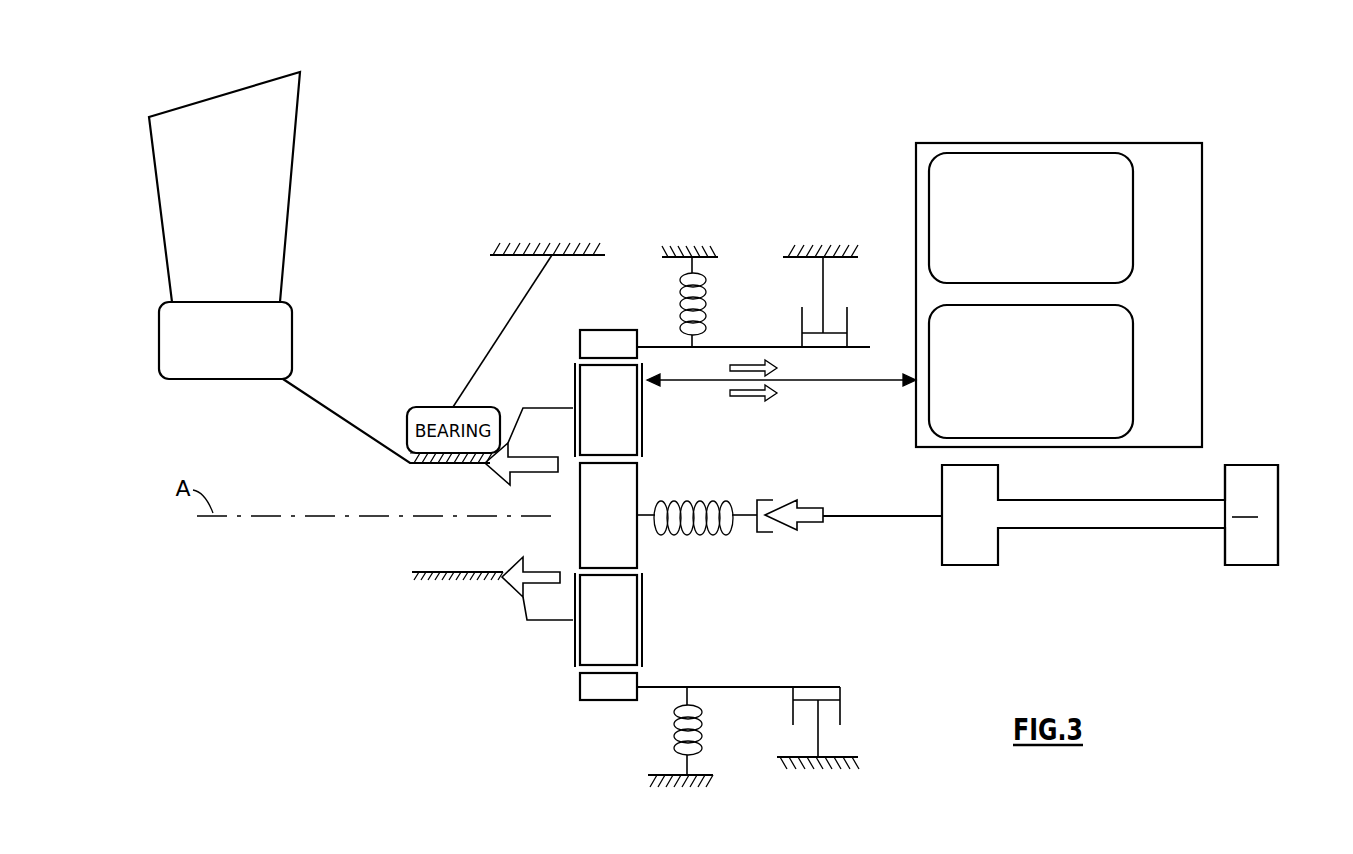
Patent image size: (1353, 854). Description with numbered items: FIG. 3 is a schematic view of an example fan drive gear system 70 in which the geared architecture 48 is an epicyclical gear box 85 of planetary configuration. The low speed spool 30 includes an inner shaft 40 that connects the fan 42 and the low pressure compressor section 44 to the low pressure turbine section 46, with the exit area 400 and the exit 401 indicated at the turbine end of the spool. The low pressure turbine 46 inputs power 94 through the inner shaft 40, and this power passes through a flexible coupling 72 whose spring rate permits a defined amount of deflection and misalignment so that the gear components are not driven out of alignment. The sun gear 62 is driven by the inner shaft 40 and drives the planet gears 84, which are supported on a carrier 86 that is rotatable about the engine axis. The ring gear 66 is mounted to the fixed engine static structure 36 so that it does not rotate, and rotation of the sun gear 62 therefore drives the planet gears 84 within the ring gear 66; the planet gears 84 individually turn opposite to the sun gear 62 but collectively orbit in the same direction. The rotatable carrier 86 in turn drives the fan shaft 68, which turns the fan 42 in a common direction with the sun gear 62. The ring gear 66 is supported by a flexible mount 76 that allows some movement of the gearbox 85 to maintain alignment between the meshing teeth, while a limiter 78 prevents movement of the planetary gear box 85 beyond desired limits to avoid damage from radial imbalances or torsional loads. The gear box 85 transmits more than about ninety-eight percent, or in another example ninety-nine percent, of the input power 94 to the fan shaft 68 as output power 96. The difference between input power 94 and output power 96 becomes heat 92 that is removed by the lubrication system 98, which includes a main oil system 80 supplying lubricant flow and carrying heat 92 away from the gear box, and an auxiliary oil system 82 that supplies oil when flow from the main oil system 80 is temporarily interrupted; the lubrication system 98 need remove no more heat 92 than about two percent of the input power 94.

The low speed spool 30 is at (1035, 513).
The engine static structure 36 is at (602, 242).
The inner shaft 40 is at (860, 517).
The fan 42 is at (209, 192).
The low pressure compressor section 44 is at (977, 478).
The low pressure turbine section 46 is at (1252, 475).
The geared architecture 48 is at (417, 712).
The sun gear 62 is at (625, 569).
The ring gear 66 is at (610, 330).
The fan shaft 68 is at (516, 610).
The fan drive gear system 70 is at (1042, 120).
The flexible coupling 72 is at (715, 501).
The flexible mount 76 is at (706, 300).
The limiter 78 is at (823, 290).
The main oil system 80 is at (1122, 408).
The auxiliary oil system 82 is at (1122, 258).
The planet gears 84 is at (620, 434).
The epicyclical gear box 85 is at (562, 697).
The carrier 86 is at (575, 390).
The heat 92 is at (745, 365).
The input power 94 is at (802, 506).
The output power 96 is at (544, 572).
The lubrication system 98 is at (1087, 295).
The exit area 400 is at (1227, 548).
The exit 401 is at (1280, 548).